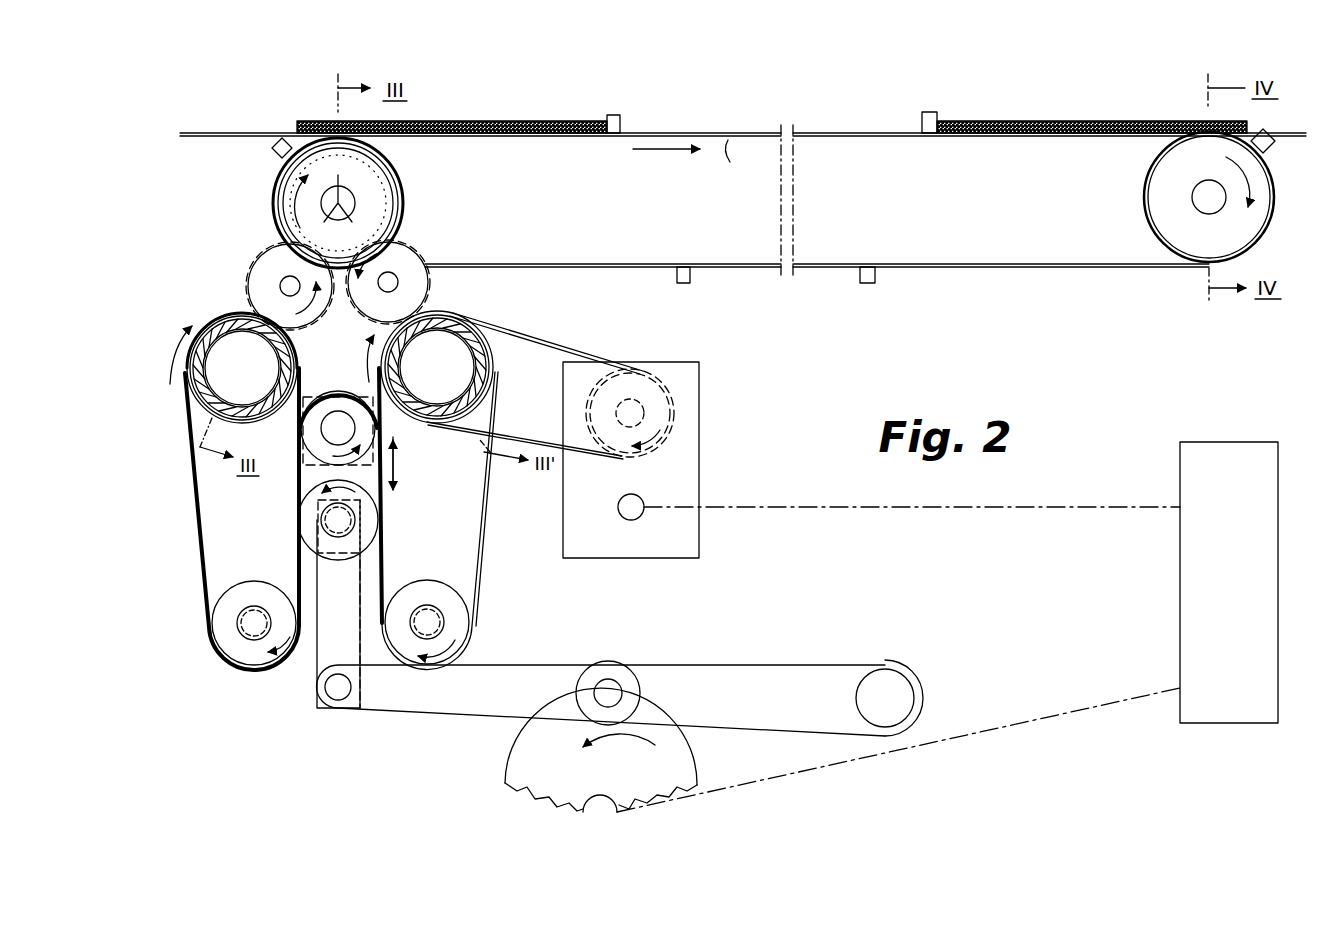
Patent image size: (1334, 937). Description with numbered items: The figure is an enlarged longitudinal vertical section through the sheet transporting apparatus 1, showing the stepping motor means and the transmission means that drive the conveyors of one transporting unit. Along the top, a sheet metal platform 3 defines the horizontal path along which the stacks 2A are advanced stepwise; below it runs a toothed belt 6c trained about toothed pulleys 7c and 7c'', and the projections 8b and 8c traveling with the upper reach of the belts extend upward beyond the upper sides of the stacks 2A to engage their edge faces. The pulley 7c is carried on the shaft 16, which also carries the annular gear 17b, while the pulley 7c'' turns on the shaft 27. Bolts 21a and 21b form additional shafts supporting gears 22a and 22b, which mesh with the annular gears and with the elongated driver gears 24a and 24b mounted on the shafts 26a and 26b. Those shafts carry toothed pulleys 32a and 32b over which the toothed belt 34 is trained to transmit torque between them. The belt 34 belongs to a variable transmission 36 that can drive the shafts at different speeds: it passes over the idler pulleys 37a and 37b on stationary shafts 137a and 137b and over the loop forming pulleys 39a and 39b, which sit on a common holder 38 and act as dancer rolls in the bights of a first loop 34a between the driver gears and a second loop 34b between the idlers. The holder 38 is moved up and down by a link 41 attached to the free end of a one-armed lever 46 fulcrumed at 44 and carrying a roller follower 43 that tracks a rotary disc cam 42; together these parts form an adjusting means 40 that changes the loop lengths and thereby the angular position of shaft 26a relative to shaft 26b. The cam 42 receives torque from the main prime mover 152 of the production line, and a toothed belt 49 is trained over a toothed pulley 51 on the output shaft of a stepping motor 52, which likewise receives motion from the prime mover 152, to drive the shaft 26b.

The sheet transporting apparatus 1 is at (275, 122).
The stacks 2A is at (514, 121).
The sheet metal platform 3 is at (192, 130).
The toothed belt 6c is at (739, 157).
The toothed pulley 7c is at (356, 203).
The toothed pulley 7c'' is at (1228, 197).
The projection 8b is at (622, 118).
The projection 8c is at (277, 152).
The shaft 16 is at (320, 204).
The annular gear 17b is at (375, 208).
The bolt 21a is at (280, 286).
The bolt 21b is at (430, 268).
The gear 22a is at (267, 268).
The gear 22b is at (398, 276).
The elongated driver gear 24a is at (219, 333).
The elongated driver gear 24b is at (457, 330).
The shaft 26a is at (237, 382).
The shaft 26b is at (460, 372).
The shaft 27 is at (1192, 199).
The toothed pulley 32a is at (163, 355).
The toothed pulley 32b is at (488, 378).
The toothed belt 34 is at (482, 545).
The first loop 34a is at (322, 395).
The second loop 34b is at (382, 548).
The variable transmission 36 is at (290, 735).
The toothed pulley 37a is at (254, 595).
The toothed pulley 37b is at (457, 621).
The holder 38 is at (310, 455).
The loop forming pulley 39a is at (300, 448).
The loop forming pulley 39b is at (300, 525).
The adjusting means 40 is at (396, 728).
The link 41 is at (326, 648).
The rotary disc cam 42 is at (680, 770).
The roller follower 43 is at (622, 680).
The fulcrum 44 is at (895, 692).
The one-armed lever 46 is at (450, 715).
The toothed belt 49 is at (543, 337).
The toothed pulley 51 is at (665, 405).
The stepping motor 52 is at (699, 448).
The stationary shaft 137a is at (238, 637).
The stationary shaft 137b is at (438, 615).
The main prime mover 152 is at (1204, 442).